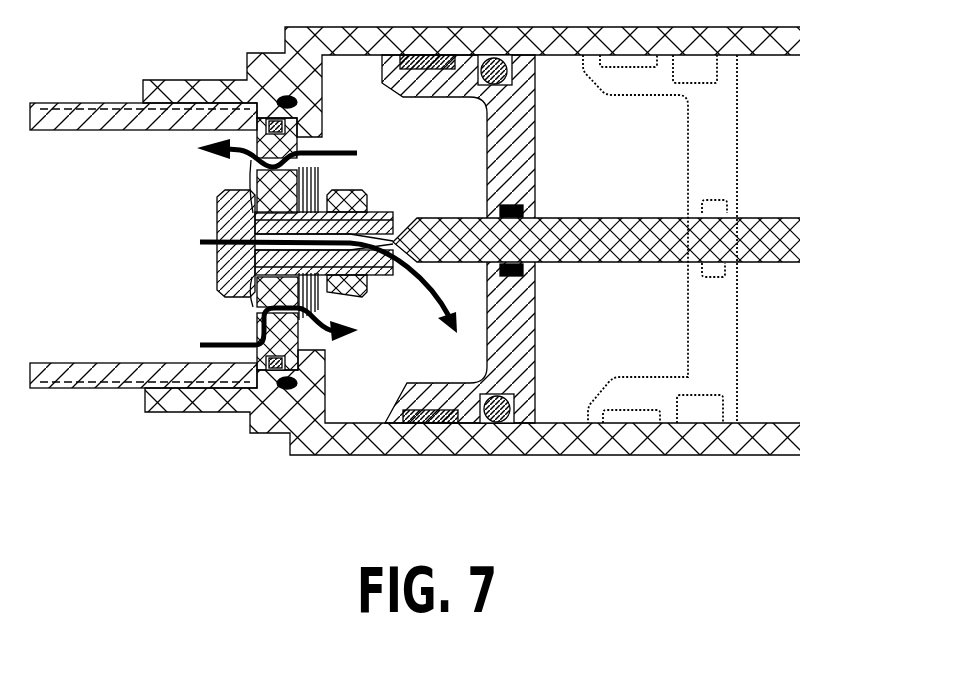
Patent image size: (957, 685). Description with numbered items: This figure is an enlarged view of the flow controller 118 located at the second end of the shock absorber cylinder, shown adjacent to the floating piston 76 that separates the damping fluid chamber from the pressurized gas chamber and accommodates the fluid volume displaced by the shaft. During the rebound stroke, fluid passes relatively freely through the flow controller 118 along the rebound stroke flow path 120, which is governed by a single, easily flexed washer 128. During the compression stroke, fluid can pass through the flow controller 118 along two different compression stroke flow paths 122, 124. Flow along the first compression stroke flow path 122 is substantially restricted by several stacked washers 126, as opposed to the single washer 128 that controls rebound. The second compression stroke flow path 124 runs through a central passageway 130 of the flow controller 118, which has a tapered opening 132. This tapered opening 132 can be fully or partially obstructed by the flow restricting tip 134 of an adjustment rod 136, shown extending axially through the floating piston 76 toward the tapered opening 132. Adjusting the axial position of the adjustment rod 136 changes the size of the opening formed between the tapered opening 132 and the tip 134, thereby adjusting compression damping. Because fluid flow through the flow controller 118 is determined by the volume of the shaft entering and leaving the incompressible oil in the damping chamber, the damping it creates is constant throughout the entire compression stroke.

The floating piston 76 is at (535, 147).
The flow controller 118 is at (158, 306).
The rebound stroke flow path 120 is at (352, 133).
The compression stroke flow path 122 is at (215, 338).
The compression stroke flow path 124 is at (195, 235).
The washers 126 is at (318, 174).
The washer 128 is at (250, 165).
The central passageway 130 is at (243, 249).
The tapered opening 132 is at (395, 222).
The flow restricting tip 134 is at (445, 253).
The adjustment rod 136 is at (587, 217).